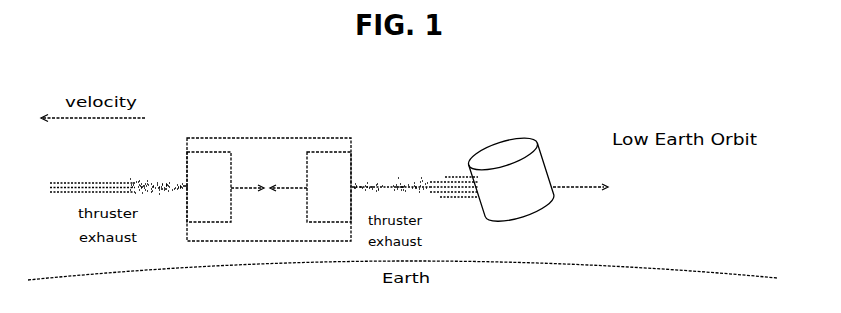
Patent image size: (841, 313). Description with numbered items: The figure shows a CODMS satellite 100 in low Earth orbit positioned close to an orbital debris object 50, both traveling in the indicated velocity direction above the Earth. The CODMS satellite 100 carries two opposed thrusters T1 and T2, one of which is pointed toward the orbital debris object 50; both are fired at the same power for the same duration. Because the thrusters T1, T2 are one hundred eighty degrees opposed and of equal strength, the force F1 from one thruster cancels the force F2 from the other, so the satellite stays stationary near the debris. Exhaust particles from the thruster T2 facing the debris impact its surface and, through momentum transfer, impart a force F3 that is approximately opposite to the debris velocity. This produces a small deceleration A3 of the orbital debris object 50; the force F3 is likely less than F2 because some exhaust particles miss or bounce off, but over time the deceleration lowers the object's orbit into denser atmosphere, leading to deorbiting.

The CODMS satellite 100 is at (283, 158).
The orbital debris object 50 is at (522, 172).
The thruster T1 is at (209, 187).
The thruster T2 is at (329, 187).
The force from first thruster F1 is at (247, 179).
The force from second thruster F2 is at (288, 179).
The force on orbital debris object F3 is at (415, 199).
The deceleration A3 is at (624, 203).